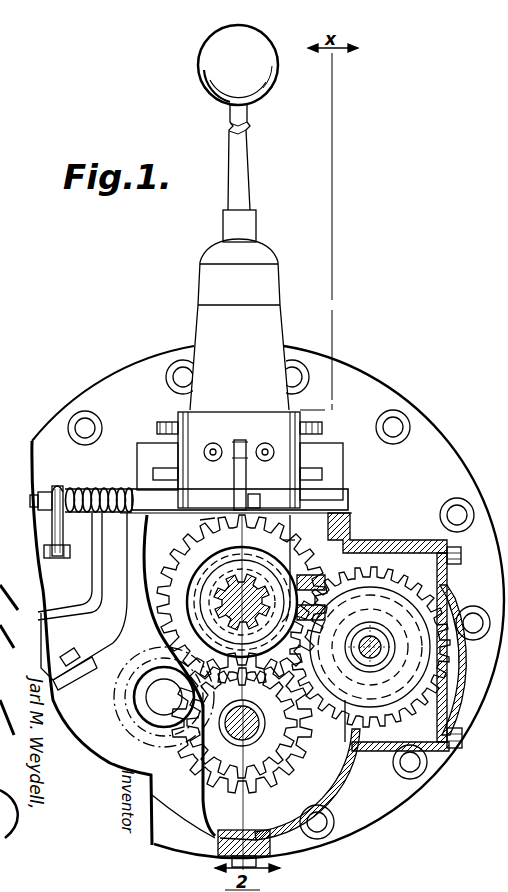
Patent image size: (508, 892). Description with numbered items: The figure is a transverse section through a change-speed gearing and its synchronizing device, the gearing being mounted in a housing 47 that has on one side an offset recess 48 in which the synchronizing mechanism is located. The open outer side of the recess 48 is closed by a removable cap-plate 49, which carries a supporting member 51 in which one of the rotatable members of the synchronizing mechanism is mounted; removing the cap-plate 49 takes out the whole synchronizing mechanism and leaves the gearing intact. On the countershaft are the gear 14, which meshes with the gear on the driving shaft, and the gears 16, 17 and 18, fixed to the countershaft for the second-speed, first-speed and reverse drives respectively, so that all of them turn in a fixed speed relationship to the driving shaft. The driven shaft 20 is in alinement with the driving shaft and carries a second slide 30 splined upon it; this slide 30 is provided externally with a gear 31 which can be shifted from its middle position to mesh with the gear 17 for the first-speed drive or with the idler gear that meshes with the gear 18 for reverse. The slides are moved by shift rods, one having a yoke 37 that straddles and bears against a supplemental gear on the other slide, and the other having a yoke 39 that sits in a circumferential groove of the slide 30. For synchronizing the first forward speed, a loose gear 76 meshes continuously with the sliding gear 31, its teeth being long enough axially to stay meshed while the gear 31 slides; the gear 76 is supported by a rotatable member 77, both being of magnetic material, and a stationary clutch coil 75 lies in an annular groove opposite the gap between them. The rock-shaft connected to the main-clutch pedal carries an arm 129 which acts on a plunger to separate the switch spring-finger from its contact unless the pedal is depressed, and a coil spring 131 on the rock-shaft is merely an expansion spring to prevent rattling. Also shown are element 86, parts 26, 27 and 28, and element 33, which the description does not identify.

The shift lever 86 is at (248, 186).
The arm 129 is at (241, 448).
The coil spring 131 is at (80, 490).
The adjusting nut 28 is at (38, 502).
The bracket arm 27 is at (55, 527).
The bracket foot 26 is at (44, 559).
The yoke 37 is at (200, 522).
The gear 31 is at (195, 536).
The second slide 30 is at (190, 606).
The bearing boss 33 is at (160, 675).
The gear 18 is at (210, 748).
The gear 17 is at (196, 772).
The gear 16 is at (204, 787).
The gear 14 is at (206, 798).
The yoke 39 is at (295, 540).
The driven shaft 20 is at (300, 585).
The housing 47 is at (352, 536).
The offset recess 48 is at (388, 568).
The removable cap-plate 49 is at (450, 588).
The supporting member 51 is at (464, 612).
The rotatable member 77 is at (370, 663).
The clutch coil 75 is at (452, 720).
The loose gear 76 is at (374, 734).